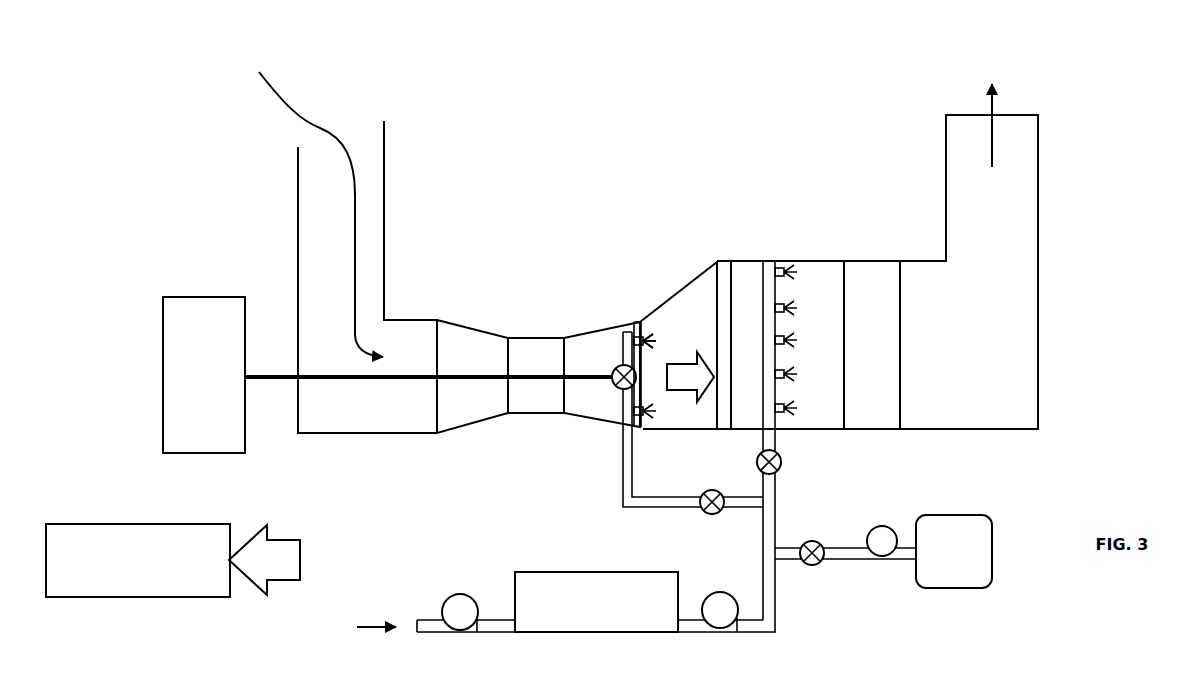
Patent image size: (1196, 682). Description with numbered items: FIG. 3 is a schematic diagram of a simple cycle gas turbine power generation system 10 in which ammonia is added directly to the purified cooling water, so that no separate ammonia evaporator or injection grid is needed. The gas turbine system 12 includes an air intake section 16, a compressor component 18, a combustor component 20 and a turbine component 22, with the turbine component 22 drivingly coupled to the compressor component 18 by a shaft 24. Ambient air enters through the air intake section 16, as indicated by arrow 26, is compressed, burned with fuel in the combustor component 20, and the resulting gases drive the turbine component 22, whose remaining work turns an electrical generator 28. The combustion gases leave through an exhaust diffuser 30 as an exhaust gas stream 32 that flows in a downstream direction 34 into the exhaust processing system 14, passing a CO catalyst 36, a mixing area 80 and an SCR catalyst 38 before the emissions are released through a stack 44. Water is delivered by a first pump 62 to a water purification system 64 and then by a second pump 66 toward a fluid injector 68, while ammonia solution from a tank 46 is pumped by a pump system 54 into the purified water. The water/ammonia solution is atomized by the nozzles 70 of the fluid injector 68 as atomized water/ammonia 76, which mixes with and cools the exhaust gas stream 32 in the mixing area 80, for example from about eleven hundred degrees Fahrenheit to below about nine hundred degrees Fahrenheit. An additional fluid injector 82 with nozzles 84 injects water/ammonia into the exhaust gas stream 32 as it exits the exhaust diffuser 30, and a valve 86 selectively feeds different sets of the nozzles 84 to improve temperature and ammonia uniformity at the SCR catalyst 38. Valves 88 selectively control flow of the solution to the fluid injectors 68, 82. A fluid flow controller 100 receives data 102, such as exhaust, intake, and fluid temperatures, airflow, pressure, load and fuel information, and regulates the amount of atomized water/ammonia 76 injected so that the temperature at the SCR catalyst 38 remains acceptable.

The simple cycle gas turbine power generation system 10 is at (521, 112).
The gas turbine system 12 is at (538, 395).
The exhaust processing system 14 is at (754, 88).
The air intake section 16 is at (297, 211).
The compressor component 18 is at (472, 376).
The combustor component 20 is at (536, 375).
The turbine component 22 is at (602, 374).
The shaft 24 is at (285, 380).
The arrow 26 is at (310, 123).
The electrical generator 28 is at (163, 375).
The exhaust diffuser 30 is at (640, 430).
The exhaust gas stream 32 is at (690, 377).
The downstream direction 34 is at (731, 443).
The CO catalyst 36 is at (710, 275).
The SCR catalyst 38 is at (900, 350).
The stack 44 is at (992, 142).
The tank 46 is at (979, 590).
The pump system 54 is at (886, 558).
The first pump 62 is at (450, 634).
The water purification system 64 is at (517, 633).
The second pump 66 is at (712, 634).
The fluid injector 68 is at (758, 262).
The nozzles 70 is at (777, 266).
The atomized water/ammonia 76 is at (654, 332).
The mixing area 80 is at (815, 413).
The additional fluid injector 82 is at (619, 336).
The nozzles 84 is at (637, 328).
The valve 86 is at (613, 391).
The valves 88 is at (762, 472).
The fluid flow controller 100 is at (138, 560).
The data 102 is at (285, 538).